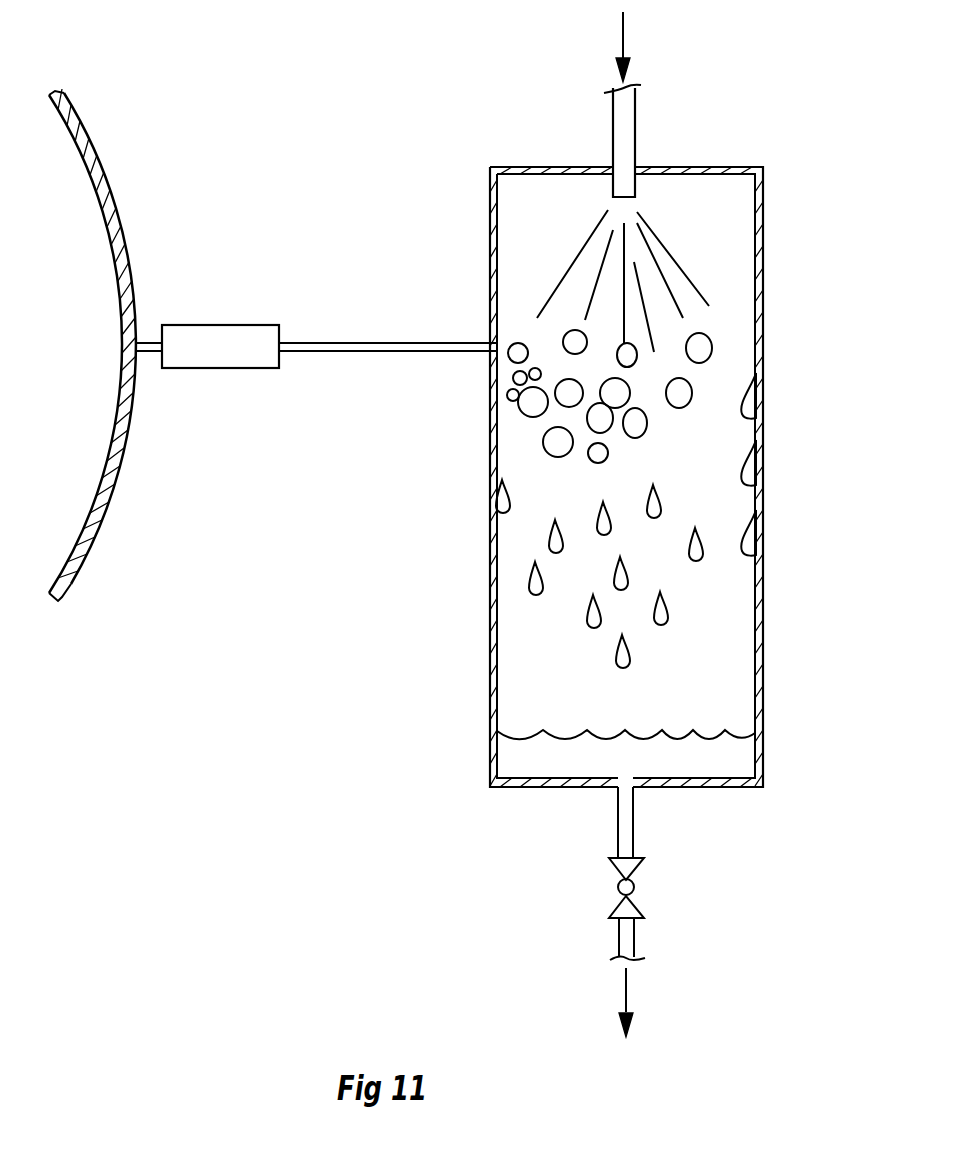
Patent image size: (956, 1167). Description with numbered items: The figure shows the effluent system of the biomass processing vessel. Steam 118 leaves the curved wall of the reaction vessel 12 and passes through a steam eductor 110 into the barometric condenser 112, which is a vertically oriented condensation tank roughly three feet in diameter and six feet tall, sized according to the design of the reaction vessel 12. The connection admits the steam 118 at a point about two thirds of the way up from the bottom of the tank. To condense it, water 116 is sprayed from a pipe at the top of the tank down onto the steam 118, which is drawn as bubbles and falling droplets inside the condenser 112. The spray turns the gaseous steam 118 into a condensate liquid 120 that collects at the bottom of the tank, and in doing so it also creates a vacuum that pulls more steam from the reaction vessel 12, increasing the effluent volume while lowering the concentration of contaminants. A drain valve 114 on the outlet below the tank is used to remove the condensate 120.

The reaction vessel 12 is at (72, 588).
The steam eductor 110 is at (217, 327).
The barometric condenser 112 is at (763, 582).
The drain valve 114 is at (637, 887).
The water 116 is at (635, 143).
The steam 118 is at (527, 410).
The condensate liquid 120 is at (510, 752).